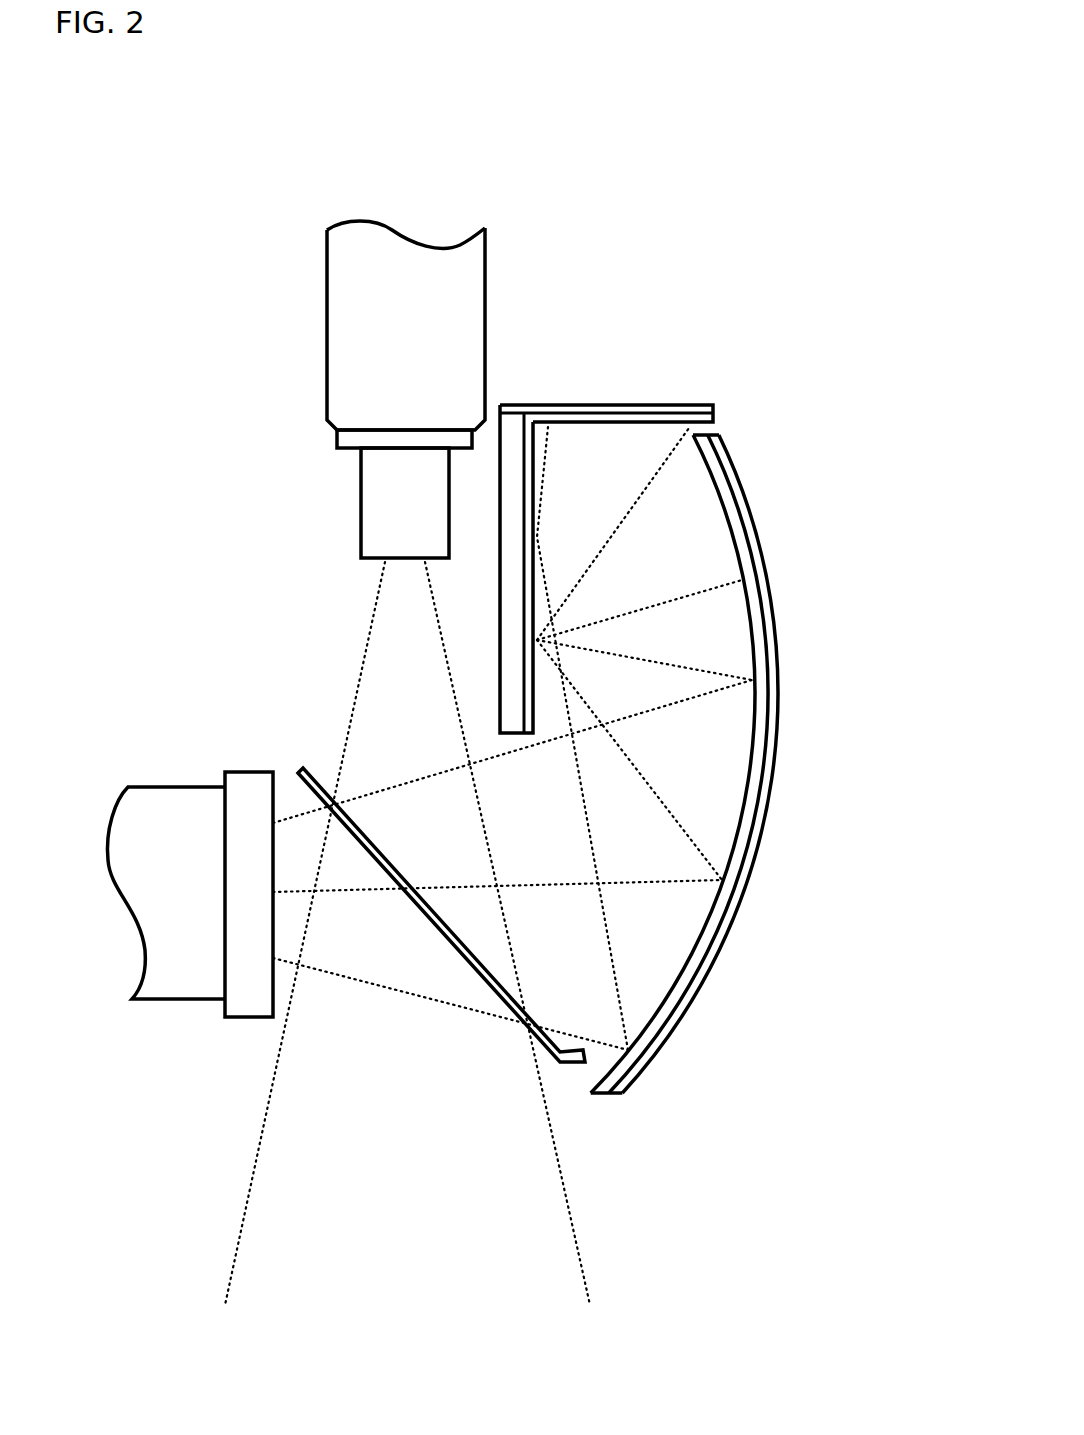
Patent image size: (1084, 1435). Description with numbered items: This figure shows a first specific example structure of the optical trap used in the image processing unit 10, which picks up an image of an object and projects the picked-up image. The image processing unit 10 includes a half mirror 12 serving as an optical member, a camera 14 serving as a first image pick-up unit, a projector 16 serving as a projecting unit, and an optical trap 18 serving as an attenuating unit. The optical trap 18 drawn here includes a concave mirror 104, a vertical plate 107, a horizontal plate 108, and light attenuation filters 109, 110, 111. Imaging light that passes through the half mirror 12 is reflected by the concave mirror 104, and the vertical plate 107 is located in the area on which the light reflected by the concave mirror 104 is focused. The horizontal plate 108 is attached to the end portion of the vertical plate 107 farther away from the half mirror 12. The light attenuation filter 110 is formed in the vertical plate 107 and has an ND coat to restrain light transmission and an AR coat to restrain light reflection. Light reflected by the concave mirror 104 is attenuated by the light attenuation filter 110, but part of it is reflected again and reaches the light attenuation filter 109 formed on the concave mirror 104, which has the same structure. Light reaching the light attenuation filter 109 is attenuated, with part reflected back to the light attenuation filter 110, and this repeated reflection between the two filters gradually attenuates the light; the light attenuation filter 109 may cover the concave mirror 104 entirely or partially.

The image processing unit 10 is at (497, 698).
The half mirror 12 is at (305, 768).
The camera 14 is at (335, 327).
The projector 16 is at (122, 828).
The optical trap 18 is at (745, 340).
The concave mirror 104 is at (743, 517).
The vertical plate 107 is at (505, 720).
The horizontal plate 108 is at (562, 405).
The light attenuation filter 109 is at (757, 730).
The light attenuation filter 110 is at (529, 634).
The light attenuation filter 111 is at (673, 423).